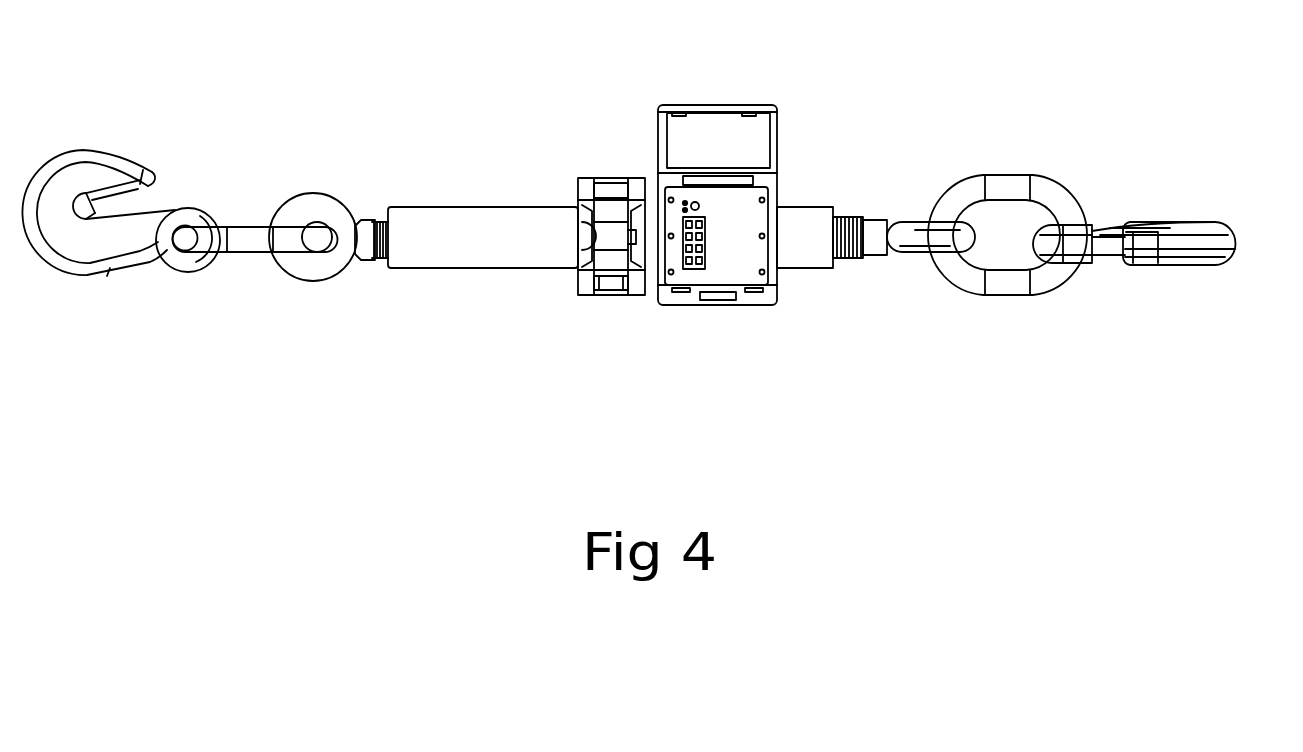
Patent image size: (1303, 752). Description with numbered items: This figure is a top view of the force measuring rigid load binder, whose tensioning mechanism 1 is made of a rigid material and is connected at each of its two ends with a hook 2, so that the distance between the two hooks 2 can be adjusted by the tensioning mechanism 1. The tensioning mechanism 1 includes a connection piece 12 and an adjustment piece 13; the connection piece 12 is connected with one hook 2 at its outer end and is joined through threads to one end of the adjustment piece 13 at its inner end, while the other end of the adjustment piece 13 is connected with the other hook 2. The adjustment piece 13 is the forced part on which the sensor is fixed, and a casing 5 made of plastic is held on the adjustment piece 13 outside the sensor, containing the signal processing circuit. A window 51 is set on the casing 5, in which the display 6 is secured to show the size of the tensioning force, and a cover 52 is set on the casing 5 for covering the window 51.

The tensioning mechanism 1 is at (584, 302).
The hook 2 is at (123, 170).
The casing 5 is at (770, 283).
The display 6 is at (683, 222).
The connection piece 12 is at (910, 243).
The adjustment piece 13 is at (487, 248).
The window 51 is at (692, 266).
The cover 52 is at (730, 127).